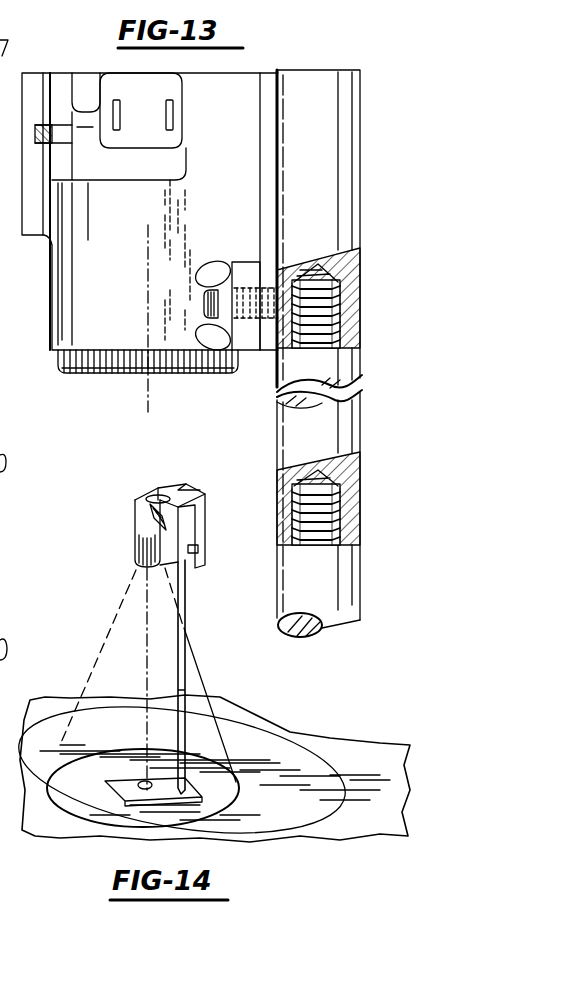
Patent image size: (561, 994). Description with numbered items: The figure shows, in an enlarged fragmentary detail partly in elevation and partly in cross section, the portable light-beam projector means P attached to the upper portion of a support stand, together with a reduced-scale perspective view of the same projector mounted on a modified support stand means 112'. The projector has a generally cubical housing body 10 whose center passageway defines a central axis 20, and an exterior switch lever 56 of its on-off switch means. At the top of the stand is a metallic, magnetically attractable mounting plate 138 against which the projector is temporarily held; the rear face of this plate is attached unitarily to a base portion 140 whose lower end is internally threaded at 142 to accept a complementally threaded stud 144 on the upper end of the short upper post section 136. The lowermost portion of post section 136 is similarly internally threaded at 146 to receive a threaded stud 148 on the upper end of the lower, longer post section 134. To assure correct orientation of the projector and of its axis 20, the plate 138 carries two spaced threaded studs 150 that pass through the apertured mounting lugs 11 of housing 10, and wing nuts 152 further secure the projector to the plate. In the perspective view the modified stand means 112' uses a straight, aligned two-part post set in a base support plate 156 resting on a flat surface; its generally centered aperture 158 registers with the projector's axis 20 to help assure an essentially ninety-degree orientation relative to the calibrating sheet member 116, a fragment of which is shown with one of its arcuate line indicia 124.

In FIG. 13, the housing body 10 is at (125, 335).
In FIG. 14, the housing body 10 is at (185, 516).
In FIG. 13, the mounting lugs 11 is at (244, 263).
In FIG. 13, the central axis 20 is at (160, 404).
In FIG. 14, the central axis 20 is at (145, 592).
In FIG. 13, the switch lever 56 is at (38, 125).
In FIG. 14, the modified support stand means 112' is at (228, 677).
In FIG. 14, the calibrating sheet member 116 is at (50, 700).
In FIG. 14, the arcuate line indicia 124 is at (103, 762).
In FIG. 13, the lower post section 134 is at (330, 602).
In FIG. 13, the upper post section 136 is at (362, 410).
In FIG. 13, the mounting plate 138 is at (276, 117).
In FIG. 13, the base portion 140 is at (330, 167).
In FIG. 13, the internally threaded portion 142 is at (338, 282).
In FIG. 13, the threaded stud 144 is at (332, 314).
In FIG. 13, the internally threaded portion 146 is at (300, 482).
In FIG. 13, the threaded stud 148 is at (332, 527).
In FIG. 13, the threaded studs 150 is at (205, 300).
In FIG. 13, the wing nuts 152 is at (222, 275).
In FIG. 14, the base support plate 156 is at (220, 752).
In FIG. 14, the centered aperture 158 is at (114, 802).
In FIG. 13, the portable light-beam projector means P is at (84, 58).
In FIG. 14, the portable light-beam projector means P is at (125, 498).